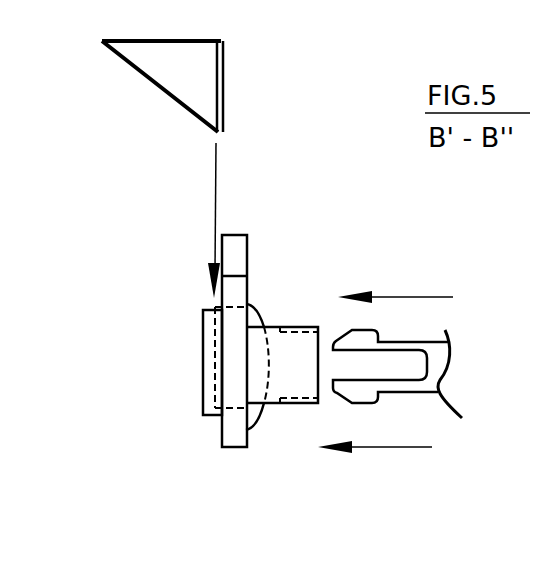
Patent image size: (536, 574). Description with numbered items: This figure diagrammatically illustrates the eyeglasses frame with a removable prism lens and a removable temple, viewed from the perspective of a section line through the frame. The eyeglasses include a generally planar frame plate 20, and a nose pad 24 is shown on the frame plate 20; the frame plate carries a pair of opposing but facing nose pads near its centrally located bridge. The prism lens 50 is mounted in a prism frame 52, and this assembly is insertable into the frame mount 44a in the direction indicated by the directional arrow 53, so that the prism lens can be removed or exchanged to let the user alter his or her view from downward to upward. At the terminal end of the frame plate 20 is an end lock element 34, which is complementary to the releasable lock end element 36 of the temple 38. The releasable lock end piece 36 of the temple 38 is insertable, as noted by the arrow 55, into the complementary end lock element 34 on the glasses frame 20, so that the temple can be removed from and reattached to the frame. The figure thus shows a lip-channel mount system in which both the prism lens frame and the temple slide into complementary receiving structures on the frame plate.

The frame plate 20 is at (248, 240).
The nose pad 24 is at (261, 306).
The end lock element 34 is at (359, 466).
The releasable lock end element 36 is at (380, 336).
The temple 38 is at (433, 395).
The frame mount 44a is at (203, 375).
The prism lens 50 is at (170, 100).
The prism frame 52 is at (224, 52).
The directional arrow 53 is at (216, 162).
The arrow 55 is at (392, 297).